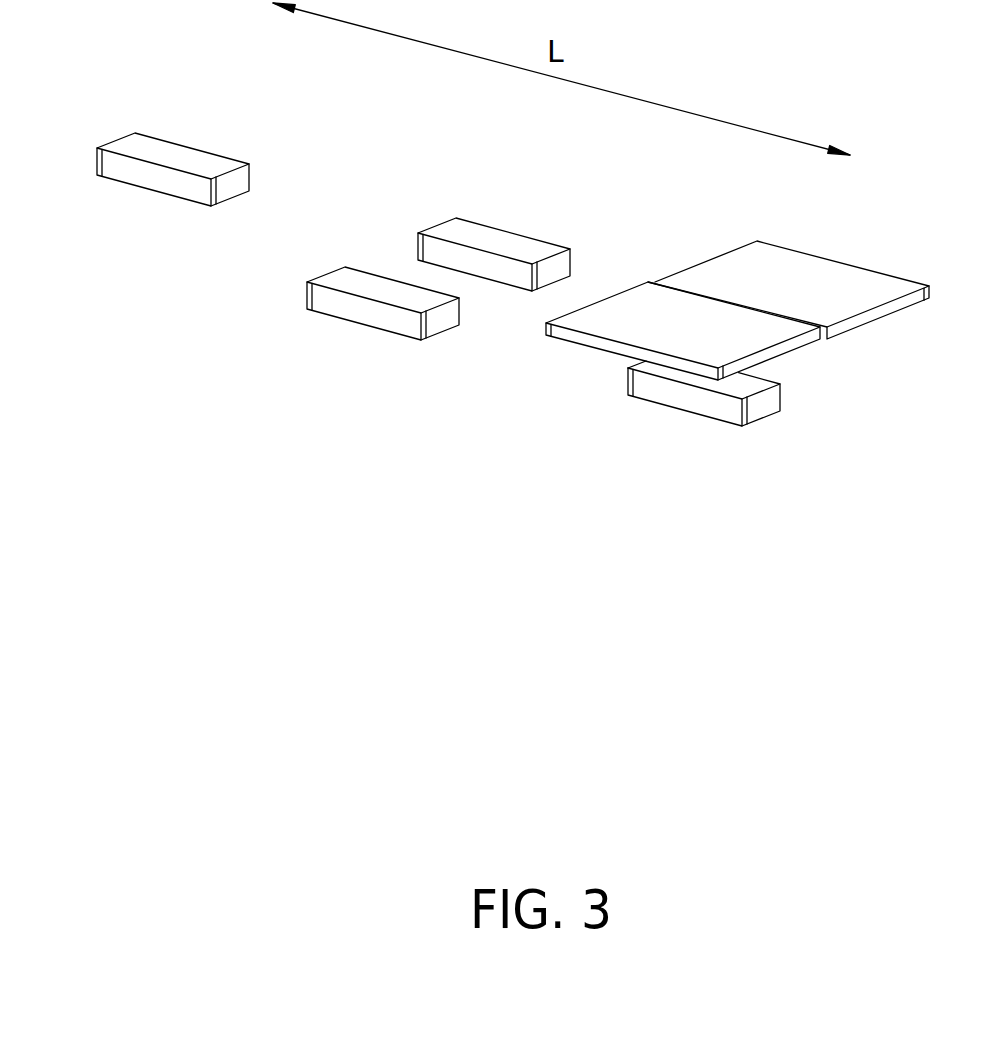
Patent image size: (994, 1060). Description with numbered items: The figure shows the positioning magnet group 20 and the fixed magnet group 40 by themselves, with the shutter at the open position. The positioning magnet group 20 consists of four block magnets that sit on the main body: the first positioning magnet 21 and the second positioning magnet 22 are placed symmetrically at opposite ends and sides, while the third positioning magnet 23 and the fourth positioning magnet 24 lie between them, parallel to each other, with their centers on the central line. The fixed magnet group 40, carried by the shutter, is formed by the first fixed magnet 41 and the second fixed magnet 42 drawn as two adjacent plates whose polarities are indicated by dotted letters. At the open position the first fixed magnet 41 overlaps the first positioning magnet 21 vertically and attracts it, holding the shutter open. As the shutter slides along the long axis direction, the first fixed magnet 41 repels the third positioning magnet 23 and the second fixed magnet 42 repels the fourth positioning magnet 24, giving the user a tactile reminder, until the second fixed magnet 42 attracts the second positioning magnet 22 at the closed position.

The positioning magnet group 20 is at (121, 108).
The first positioning magnet 21 is at (675, 397).
The second positioning magnet 22 is at (158, 182).
The third positioning magnet 23 is at (347, 308).
The fourth positioning magnet 24 is at (475, 232).
The fixed magnet group 40 is at (843, 223).
The first fixed magnet 41 is at (602, 342).
The second fixed magnet 42 is at (838, 273).